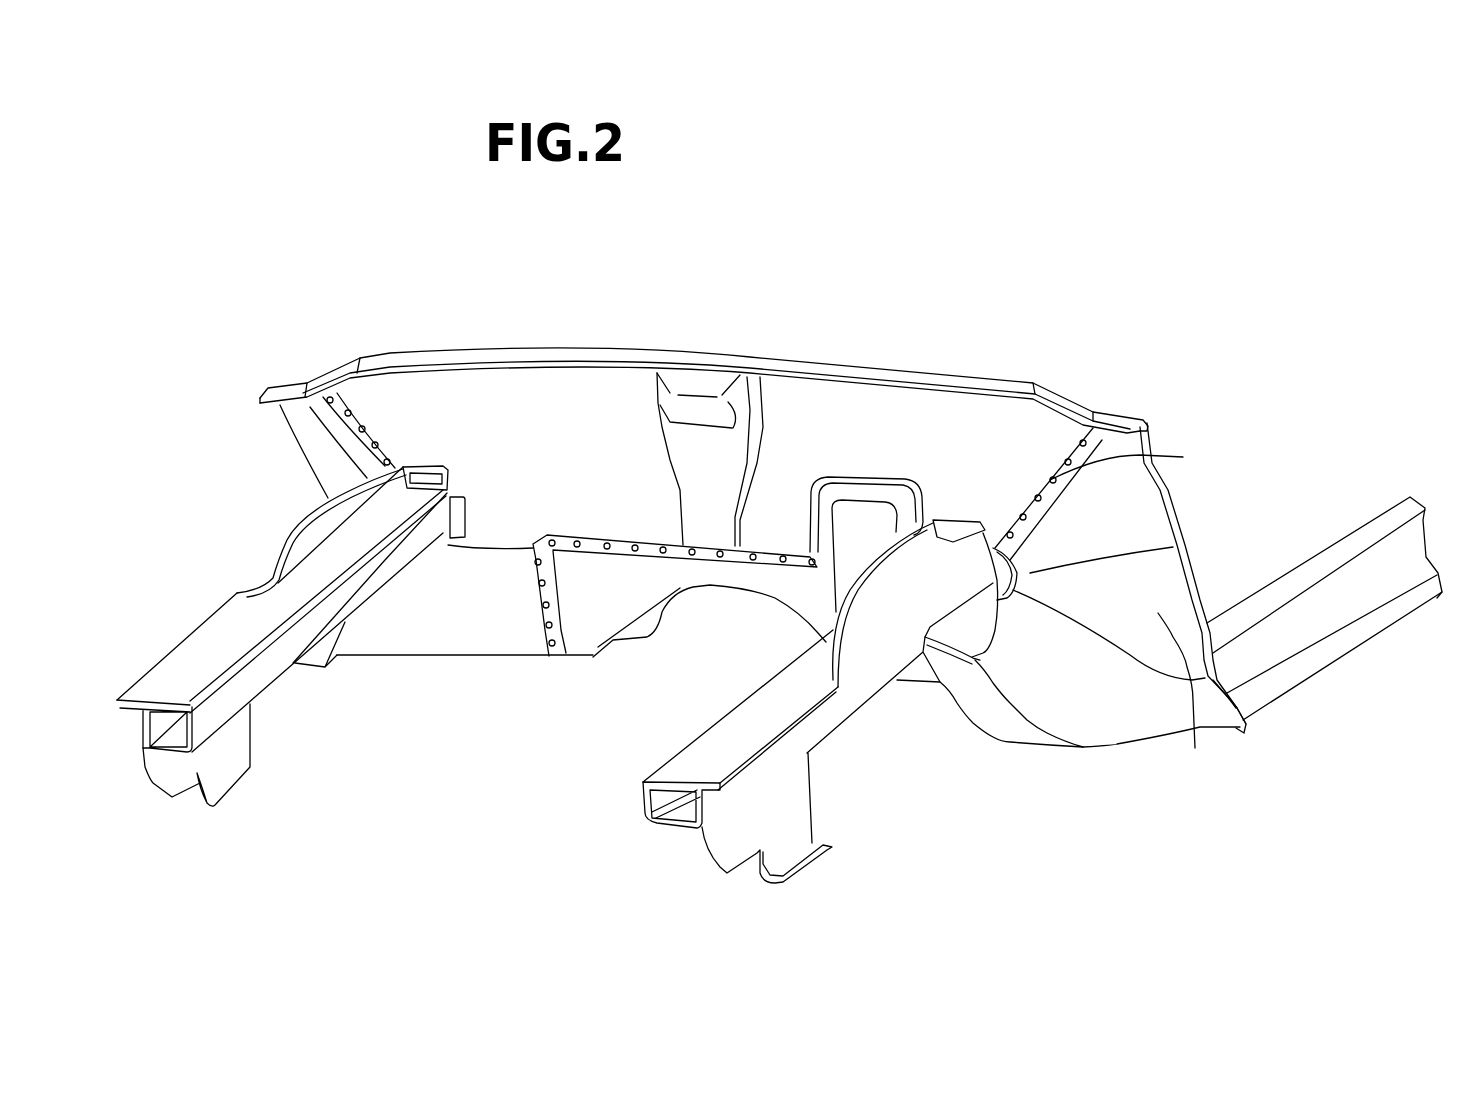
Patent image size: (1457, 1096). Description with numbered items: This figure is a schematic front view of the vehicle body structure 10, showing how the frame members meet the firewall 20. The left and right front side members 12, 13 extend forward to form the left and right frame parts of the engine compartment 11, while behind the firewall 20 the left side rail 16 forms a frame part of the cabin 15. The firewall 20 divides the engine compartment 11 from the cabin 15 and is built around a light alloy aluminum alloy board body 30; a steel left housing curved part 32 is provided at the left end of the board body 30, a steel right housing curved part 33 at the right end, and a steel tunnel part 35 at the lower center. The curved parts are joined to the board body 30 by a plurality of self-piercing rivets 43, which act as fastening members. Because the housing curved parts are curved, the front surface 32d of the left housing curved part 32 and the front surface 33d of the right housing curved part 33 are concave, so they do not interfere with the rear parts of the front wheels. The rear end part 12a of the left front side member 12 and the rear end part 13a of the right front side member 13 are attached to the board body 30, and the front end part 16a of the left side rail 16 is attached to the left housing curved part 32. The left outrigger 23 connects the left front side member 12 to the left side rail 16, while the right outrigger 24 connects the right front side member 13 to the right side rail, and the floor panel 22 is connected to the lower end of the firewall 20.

The vehicle body structure 10 is at (393, 270).
The firewall 20 is at (657, 318).
The board body 30 is at (795, 346).
The cabin 15 is at (1085, 312).
The right housing curved part 33 is at (290, 418).
The front surface 33d is at (325, 462).
The self-piercing rivets 43 is at (377, 430).
The right front side member 13 is at (193, 650).
The rear end part 13a is at (467, 512).
The engine compartment 11 is at (470, 719).
The right outrigger 24 is at (352, 630).
The tunnel part 35 is at (617, 617).
The left front side member 12 is at (833, 713).
The rear end part 12a is at (1017, 587).
The left outrigger 23 is at (1107, 720).
The front surface 32d is at (1195, 748).
The left housing curved part 32 is at (1157, 463).
The floor panel 22 is at (1277, 515).
The left side rail 16 is at (1363, 613).
The front end part 16a is at (1230, 670).